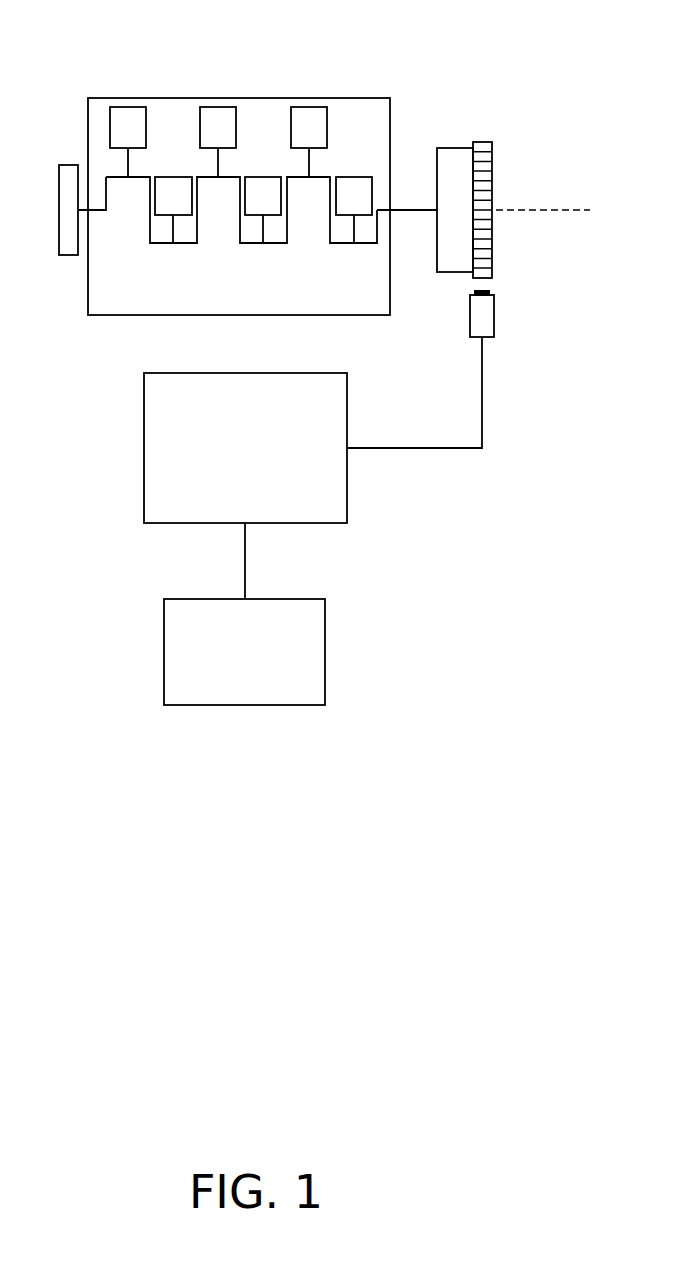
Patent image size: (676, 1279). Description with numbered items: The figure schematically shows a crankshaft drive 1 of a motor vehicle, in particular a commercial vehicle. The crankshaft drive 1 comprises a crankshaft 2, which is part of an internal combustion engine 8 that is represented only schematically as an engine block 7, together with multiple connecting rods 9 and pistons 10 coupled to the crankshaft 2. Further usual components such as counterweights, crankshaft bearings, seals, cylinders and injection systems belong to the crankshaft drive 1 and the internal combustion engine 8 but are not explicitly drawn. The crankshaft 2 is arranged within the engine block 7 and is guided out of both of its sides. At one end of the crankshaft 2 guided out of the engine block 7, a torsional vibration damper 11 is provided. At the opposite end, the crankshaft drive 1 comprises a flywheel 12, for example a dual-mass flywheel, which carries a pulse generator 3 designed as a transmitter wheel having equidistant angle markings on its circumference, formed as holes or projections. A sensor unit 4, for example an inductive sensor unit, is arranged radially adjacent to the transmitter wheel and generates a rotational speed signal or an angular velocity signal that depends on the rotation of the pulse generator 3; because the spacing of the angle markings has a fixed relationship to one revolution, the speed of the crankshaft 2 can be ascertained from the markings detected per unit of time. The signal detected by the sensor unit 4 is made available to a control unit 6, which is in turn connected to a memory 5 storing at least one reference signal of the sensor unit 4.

The crankshaft drive 1 is at (226, 166).
The crankshaft 2 is at (413, 208).
The pulse generator 3 is at (481, 176).
The sensor unit 4 is at (485, 318).
The memory 5 is at (310, 620).
The control unit 6 is at (330, 400).
The engine block 7 is at (170, 98).
The internal combustion engine 8 is at (103, 293).
The connecting rods 9 is at (177, 232).
The pistons 10 is at (308, 125).
The torsional vibration damper 11 is at (70, 177).
The flywheel 12 is at (455, 165).